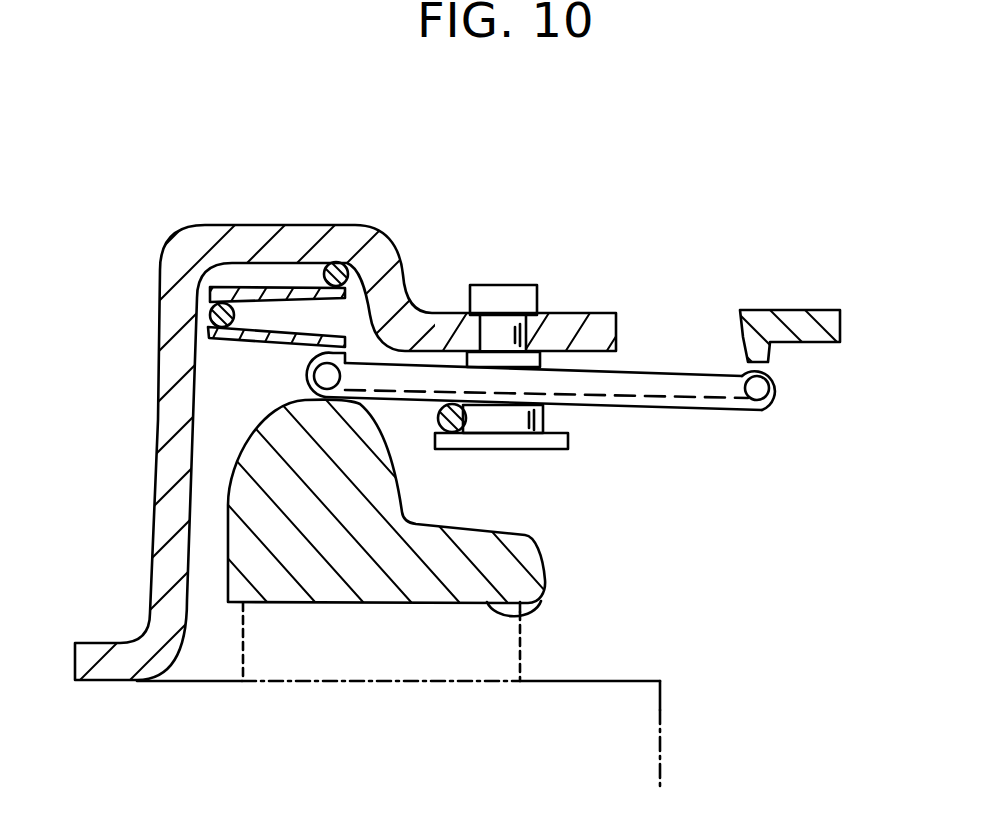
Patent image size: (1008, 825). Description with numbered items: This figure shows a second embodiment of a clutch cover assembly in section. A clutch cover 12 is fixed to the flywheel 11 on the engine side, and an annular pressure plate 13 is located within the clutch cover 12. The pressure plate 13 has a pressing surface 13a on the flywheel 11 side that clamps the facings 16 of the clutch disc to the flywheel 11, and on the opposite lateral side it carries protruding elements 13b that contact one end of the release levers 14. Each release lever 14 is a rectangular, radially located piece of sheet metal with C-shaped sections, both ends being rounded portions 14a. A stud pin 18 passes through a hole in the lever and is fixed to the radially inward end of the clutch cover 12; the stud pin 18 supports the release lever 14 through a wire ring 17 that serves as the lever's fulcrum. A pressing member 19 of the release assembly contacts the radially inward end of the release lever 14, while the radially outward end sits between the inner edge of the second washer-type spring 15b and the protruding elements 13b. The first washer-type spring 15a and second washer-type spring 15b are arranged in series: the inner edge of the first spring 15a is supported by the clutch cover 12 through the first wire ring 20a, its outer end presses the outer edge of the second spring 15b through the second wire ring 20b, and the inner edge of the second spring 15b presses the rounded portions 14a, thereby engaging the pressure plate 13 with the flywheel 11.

The flywheel 11 is at (667, 712).
The clutch cover 12 is at (297, 242).
The pressure plate 13 is at (332, 497).
The pressing surface 13a is at (527, 601).
The protruding elements 13b is at (278, 457).
The release lever 14 is at (650, 390).
The rounded portions 14a is at (309, 368).
The first washer-type spring 15a is at (260, 287).
The second washer-type spring 15b is at (257, 347).
The facings 16 is at (520, 637).
The wire ring 17 is at (438, 411).
The stud pin 18 is at (497, 360).
The pressing member 19 is at (775, 320).
The first wire ring 20a is at (350, 263).
The second wire ring 20b is at (209, 317).